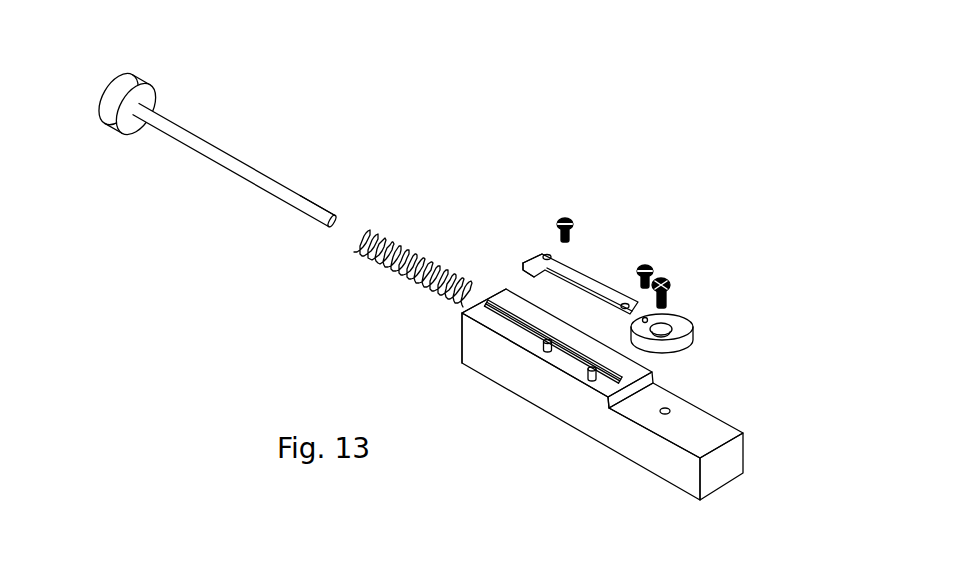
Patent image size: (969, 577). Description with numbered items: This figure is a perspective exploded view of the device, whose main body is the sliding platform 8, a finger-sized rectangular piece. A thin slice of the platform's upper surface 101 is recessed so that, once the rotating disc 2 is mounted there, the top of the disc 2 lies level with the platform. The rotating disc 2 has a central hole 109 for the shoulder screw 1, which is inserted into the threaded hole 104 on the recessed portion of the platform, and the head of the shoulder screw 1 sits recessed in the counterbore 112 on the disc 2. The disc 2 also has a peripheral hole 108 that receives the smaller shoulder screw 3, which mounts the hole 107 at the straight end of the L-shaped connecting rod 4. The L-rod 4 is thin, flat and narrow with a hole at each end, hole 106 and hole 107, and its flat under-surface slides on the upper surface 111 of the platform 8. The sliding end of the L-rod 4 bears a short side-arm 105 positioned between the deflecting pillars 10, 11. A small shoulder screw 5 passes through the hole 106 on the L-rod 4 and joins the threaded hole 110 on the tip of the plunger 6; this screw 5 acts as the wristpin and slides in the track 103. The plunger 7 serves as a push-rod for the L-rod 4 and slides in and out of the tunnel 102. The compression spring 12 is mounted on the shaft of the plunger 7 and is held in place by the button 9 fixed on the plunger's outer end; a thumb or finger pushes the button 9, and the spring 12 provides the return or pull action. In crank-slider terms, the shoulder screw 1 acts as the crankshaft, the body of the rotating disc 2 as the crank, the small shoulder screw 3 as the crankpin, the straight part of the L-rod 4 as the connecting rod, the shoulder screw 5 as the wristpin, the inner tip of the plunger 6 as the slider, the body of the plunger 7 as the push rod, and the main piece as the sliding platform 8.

The shoulder screw 1 is at (669, 296).
The rotating disc 2 is at (694, 345).
The smaller shoulder screw 3 is at (652, 266).
The L-shaped connecting rod 4 is at (595, 280).
The small shoulder screw 5 is at (563, 216).
The plunger tip 6 is at (327, 220).
The plunger 7 is at (257, 166).
The sliding platform 8 is at (682, 467).
The button 9 is at (122, 74).
The deflecting pillar 10 is at (540, 350).
The deflecting pillar 11 is at (592, 377).
The compression spring 12 is at (430, 258).
The upper surface 101 is at (727, 422).
The tunnel 102 is at (462, 312).
The track 103 is at (522, 320).
The threaded hole 104 is at (670, 409).
The side-arm 105 is at (530, 262).
The hole 106 is at (545, 250).
The hole 107 is at (664, 291).
The peripheral hole 108 is at (648, 320).
The central hole 109 is at (672, 327).
The threaded hole 110 is at (329, 208).
The upper surface 111 is at (523, 338).
The counterbore 112 is at (660, 335).